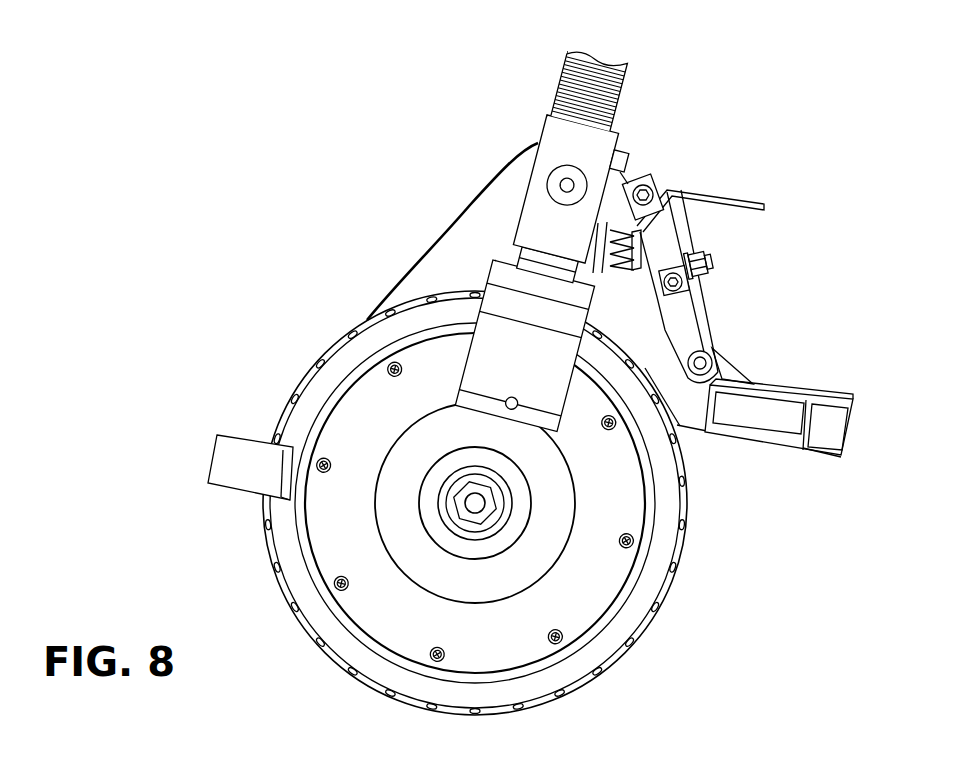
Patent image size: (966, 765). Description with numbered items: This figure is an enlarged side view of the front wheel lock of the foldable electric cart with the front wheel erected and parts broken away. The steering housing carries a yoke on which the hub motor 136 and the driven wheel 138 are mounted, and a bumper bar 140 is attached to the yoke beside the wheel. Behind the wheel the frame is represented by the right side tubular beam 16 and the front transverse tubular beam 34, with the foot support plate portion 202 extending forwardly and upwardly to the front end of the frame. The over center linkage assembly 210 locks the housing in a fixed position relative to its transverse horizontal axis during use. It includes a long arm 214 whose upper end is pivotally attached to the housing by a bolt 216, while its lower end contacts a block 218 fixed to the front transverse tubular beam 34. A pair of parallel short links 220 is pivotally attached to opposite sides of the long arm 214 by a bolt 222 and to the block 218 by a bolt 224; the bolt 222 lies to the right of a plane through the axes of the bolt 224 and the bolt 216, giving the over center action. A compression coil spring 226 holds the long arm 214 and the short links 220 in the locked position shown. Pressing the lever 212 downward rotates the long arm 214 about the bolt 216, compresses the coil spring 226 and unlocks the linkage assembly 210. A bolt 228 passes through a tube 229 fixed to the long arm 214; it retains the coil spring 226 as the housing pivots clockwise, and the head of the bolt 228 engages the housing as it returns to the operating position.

The right side tubular beam 16 is at (828, 453).
The front transverse tubular beam 34 is at (720, 433).
The hub motor 136 is at (377, 632).
The driven wheel 138 is at (613, 660).
The bumper bar 140 is at (236, 438).
The foot support plate portion 202 is at (837, 395).
The over center linkage assembly 210 is at (767, 235).
The lever 212 is at (722, 185).
The long arm 214 is at (667, 210).
The bolt 216 is at (653, 177).
The block 218 is at (743, 373).
The pair of parallel short links 220 is at (693, 327).
The bolt 222 is at (693, 303).
The bolt 224 is at (724, 356).
The compression coil spring 226 is at (635, 180).
The bolt 228 is at (712, 263).
The tube 229 is at (685, 252).